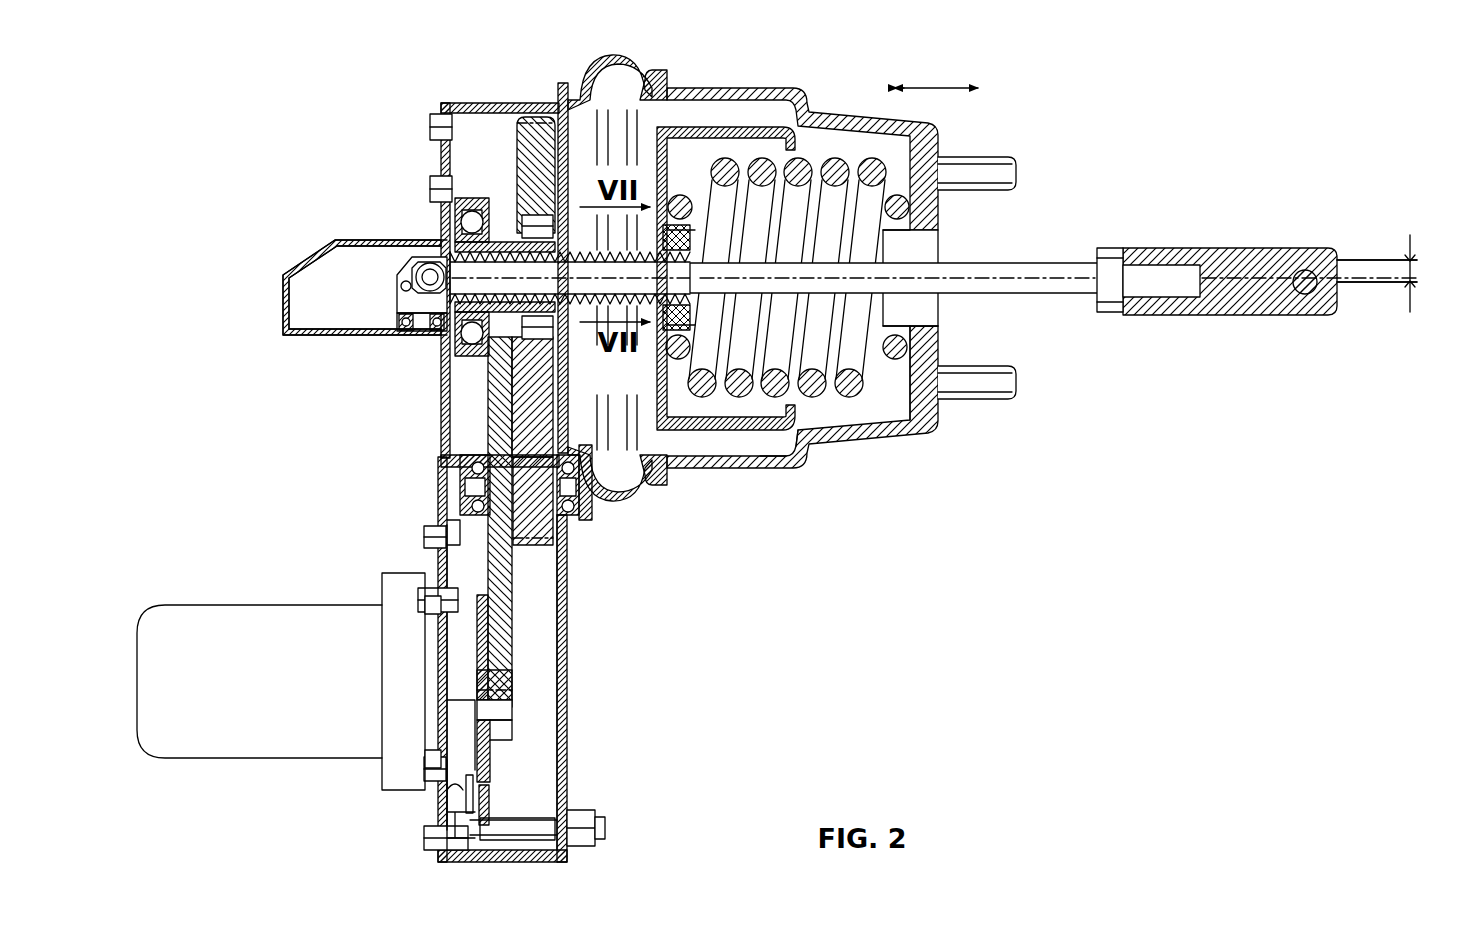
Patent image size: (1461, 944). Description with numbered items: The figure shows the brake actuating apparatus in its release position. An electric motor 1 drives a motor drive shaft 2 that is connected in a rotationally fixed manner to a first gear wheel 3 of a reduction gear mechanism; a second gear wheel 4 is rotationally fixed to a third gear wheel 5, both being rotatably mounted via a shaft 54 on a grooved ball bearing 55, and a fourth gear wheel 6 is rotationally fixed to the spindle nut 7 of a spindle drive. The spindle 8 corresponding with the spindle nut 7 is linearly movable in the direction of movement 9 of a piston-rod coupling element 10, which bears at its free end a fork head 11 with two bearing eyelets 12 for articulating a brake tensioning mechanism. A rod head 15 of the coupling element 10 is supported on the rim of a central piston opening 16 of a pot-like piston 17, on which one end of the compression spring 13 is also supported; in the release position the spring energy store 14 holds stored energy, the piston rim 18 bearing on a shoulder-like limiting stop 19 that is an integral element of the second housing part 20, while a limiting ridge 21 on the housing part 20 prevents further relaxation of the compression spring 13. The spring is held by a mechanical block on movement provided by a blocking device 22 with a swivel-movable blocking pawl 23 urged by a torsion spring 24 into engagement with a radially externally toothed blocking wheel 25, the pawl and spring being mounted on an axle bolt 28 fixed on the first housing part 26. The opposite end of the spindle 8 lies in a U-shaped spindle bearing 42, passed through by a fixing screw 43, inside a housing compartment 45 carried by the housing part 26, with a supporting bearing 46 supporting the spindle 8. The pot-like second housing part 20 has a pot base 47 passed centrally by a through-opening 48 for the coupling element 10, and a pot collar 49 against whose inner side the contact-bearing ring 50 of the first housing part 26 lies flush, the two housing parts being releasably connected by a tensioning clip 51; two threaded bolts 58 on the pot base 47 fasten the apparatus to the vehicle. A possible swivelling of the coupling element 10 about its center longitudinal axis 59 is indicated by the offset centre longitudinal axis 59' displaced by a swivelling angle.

The electric motor 1 is at (232, 648).
The motor drive shaft 2 is at (492, 682).
The first gear wheel 3 is at (490, 652).
The second gear wheel 4 is at (500, 600).
The third gear wheel 5 is at (545, 532).
The fourth gear wheel 6 is at (532, 160).
The spindle nut 7 is at (447, 240).
The spindle 8 is at (400, 322).
The direction of movement 9 is at (937, 90).
The piston-rod coupling element 10 is at (1085, 300).
The fork head 11 is at (1235, 300).
The bearing eyelets 12 is at (1305, 296).
The compression spring 13 is at (850, 392).
The spring energy store 14 is at (884, 398).
The rod head 15 is at (665, 248).
The central piston opening 16 is at (668, 232).
The pot-like piston 17 is at (750, 130).
The piston rim 18 is at (768, 460).
The limiting stop 19 is at (812, 446).
The second housing part 20 is at (918, 420).
The limiting ridge 21 is at (720, 100).
The blocking device 22 is at (518, 772).
The blocking pawl 23 is at (470, 800).
The torsion spring 24 is at (440, 790).
The blocking wheel 25 is at (485, 742).
The first housing part 26 is at (440, 528).
The axle bolt 28 is at (606, 828).
The spindle bearing 42 is at (398, 292).
The fixing screw 43 is at (430, 263).
The housing compartment 45 is at (323, 341).
The supporting bearing 46 is at (405, 334).
The pot base 47 is at (925, 362).
The through-opening 48 is at (915, 318).
The pot collar 49 is at (652, 90).
The contact-bearing ring 50 is at (600, 76).
The tensioning clip 51 is at (598, 492).
The shaft 54 is at (460, 492).
The grooved ball bearing 55 is at (455, 462).
The threaded bolts 58 is at (985, 172).
The center longitudinal axis 59 is at (1377, 330).
The offset centre longitudinal axis 59' is at (1377, 208).